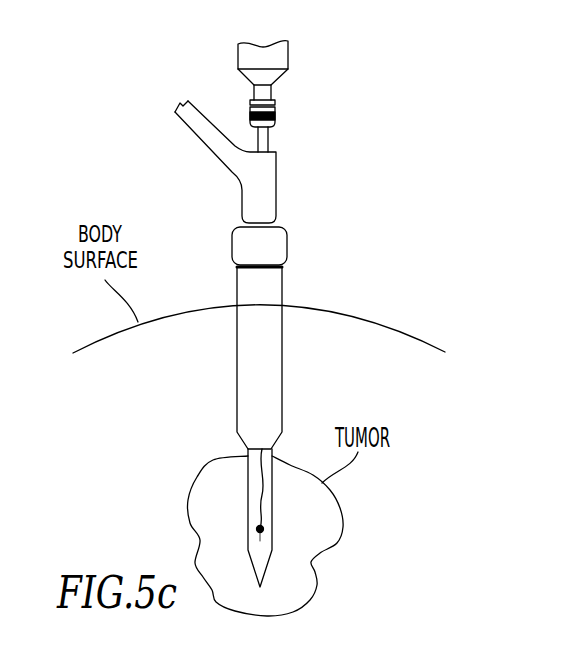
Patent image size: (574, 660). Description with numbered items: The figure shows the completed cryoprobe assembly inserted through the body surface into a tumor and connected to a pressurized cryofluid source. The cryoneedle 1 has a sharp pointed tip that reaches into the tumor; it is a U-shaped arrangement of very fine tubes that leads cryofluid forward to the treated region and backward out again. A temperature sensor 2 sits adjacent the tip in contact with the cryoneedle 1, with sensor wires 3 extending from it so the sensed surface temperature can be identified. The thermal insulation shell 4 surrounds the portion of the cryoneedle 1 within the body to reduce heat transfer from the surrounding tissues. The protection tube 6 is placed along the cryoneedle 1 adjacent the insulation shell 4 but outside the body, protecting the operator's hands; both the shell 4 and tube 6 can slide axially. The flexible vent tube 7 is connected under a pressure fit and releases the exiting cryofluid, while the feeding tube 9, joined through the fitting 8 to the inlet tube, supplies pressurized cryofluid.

The cryoneedle 1 is at (265, 467).
The temperature sensor 2 is at (257, 526).
The sensor wires 3 is at (208, 282).
The thermal insulation shell 4 is at (237, 372).
The protection tube 6 is at (288, 243).
The vent tube 7 is at (278, 180).
The fitting 8 is at (277, 112).
The feeding tube 9 is at (238, 60).